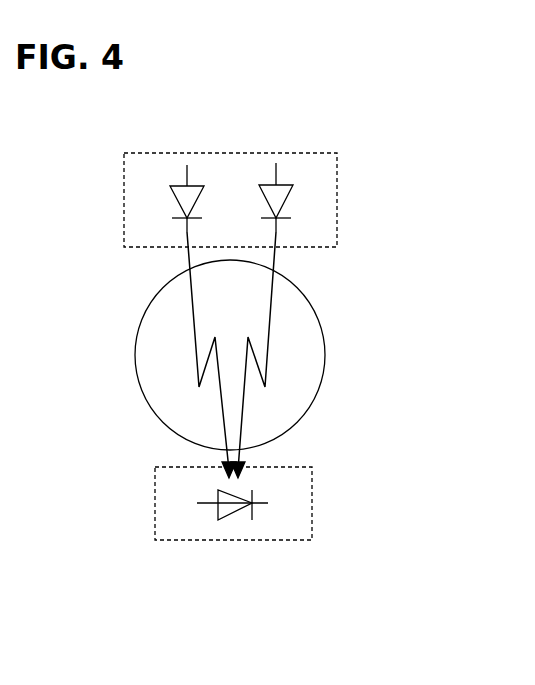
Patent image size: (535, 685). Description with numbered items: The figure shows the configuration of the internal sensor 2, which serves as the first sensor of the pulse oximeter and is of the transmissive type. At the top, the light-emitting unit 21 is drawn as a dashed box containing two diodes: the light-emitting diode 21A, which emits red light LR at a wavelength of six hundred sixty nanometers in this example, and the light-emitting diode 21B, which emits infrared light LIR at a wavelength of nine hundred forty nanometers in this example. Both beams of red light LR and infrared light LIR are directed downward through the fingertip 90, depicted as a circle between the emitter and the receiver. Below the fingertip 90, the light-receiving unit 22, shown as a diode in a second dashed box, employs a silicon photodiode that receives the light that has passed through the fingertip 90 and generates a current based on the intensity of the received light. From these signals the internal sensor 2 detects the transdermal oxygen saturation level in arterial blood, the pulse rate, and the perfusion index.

The internal sensor 2 is at (90, 170).
The light-emitting unit 21 is at (338, 162).
The light-emitting diode 21A is at (172, 200).
The light-emitting diode 21B is at (288, 198).
The light-receiving unit 22 is at (312, 500).
The fingertip 90 is at (318, 312).
The red light LR is at (197, 340).
The infrared light LIR is at (268, 340).